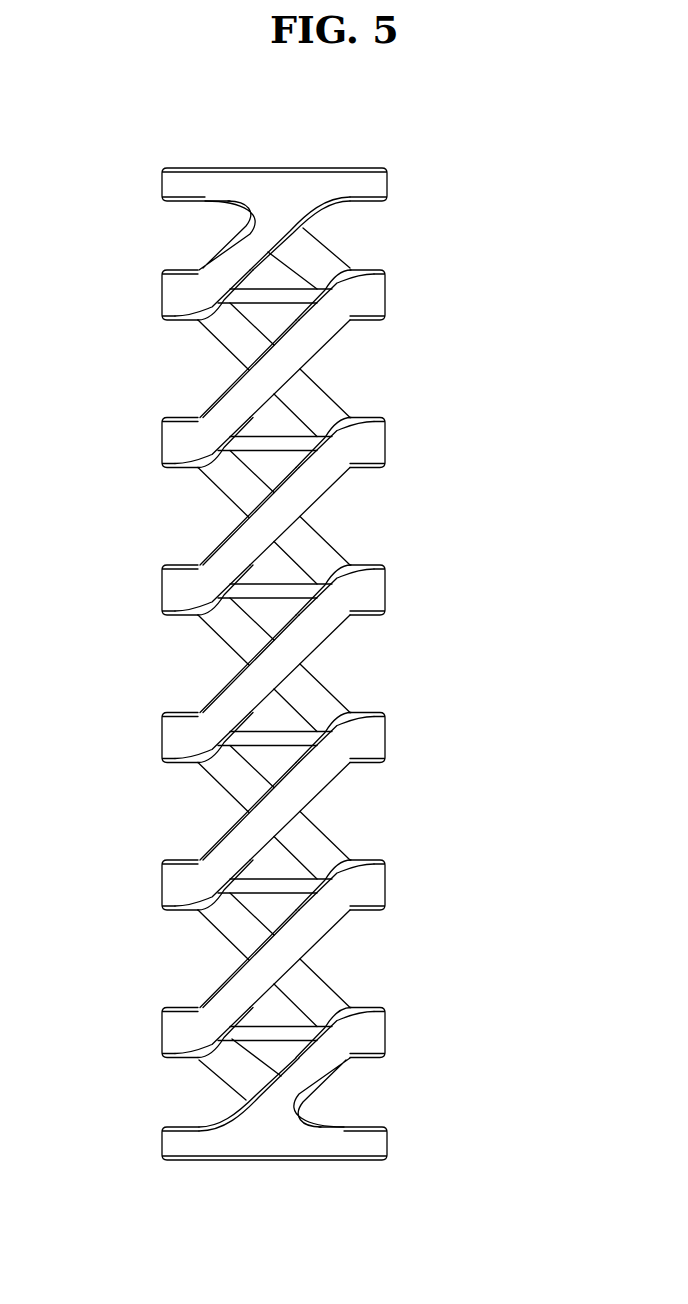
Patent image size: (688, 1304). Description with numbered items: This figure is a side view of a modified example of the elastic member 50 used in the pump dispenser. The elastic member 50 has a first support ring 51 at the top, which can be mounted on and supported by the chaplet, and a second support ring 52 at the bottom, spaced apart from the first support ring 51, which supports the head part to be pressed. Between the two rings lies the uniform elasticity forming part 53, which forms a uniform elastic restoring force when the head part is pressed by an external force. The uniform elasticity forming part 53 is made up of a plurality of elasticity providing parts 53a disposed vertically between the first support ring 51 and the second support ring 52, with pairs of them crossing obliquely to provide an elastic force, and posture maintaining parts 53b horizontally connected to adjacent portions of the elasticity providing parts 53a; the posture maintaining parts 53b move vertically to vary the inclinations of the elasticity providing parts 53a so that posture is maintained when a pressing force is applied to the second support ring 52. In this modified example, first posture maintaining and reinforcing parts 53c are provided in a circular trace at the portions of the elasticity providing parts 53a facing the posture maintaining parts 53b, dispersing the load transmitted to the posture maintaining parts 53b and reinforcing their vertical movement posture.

The elastic member 50 is at (487, 159).
The first support ring 51 is at (272, 183).
The second support ring 52 is at (263, 1147).
The uniform elasticity forming part 53 is at (552, 542).
The elasticity providing parts 53a is at (330, 760).
The posture maintaining parts 53b is at (375, 588).
The first posture maintaining and reinforcing parts 53c is at (270, 590).